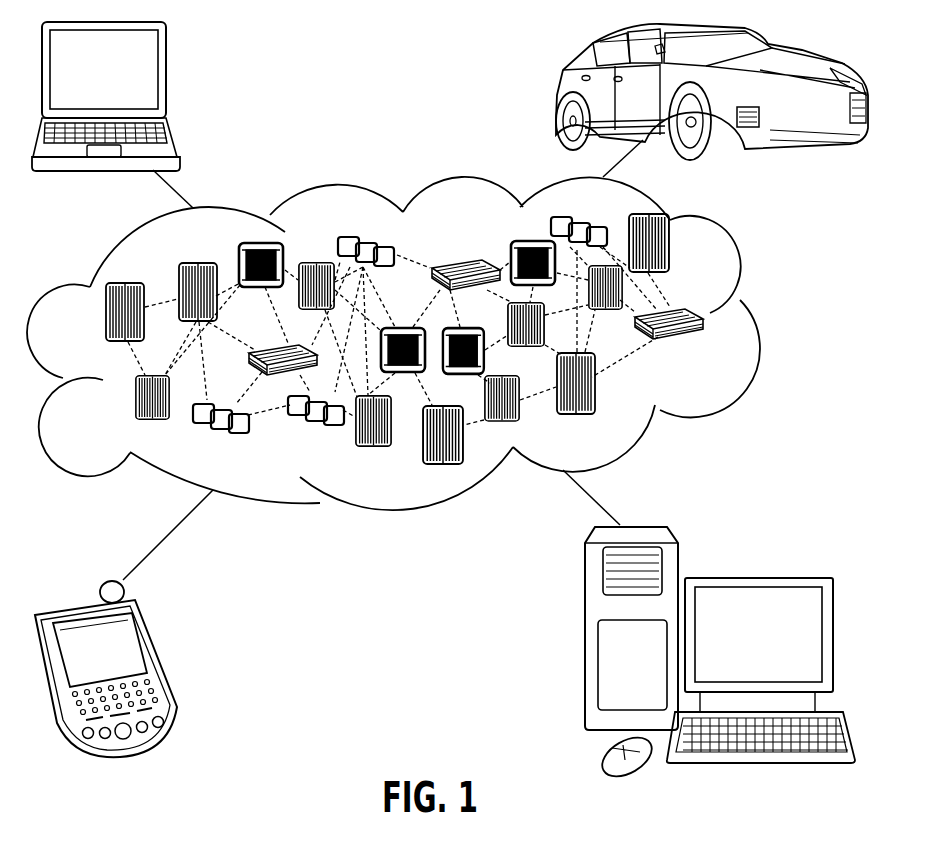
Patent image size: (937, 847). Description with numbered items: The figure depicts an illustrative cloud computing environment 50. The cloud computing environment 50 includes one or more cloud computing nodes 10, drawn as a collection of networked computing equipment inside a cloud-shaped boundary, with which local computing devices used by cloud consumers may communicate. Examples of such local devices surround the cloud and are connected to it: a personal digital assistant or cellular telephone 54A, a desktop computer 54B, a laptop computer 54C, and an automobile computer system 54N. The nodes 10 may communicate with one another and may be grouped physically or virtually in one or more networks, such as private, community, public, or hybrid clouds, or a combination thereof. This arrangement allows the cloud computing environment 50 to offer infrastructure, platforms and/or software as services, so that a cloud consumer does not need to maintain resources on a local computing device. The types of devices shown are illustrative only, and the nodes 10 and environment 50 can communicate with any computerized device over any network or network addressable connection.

The cloud computing nodes 10 is at (706, 348).
The cloud computing environment 50 is at (760, 318).
The personal digital assistant or cellular telephone 54A is at (157, 663).
The desktop computer 54B is at (753, 577).
The laptop computer 54C is at (167, 72).
The automobile computer system 54N is at (562, 90).